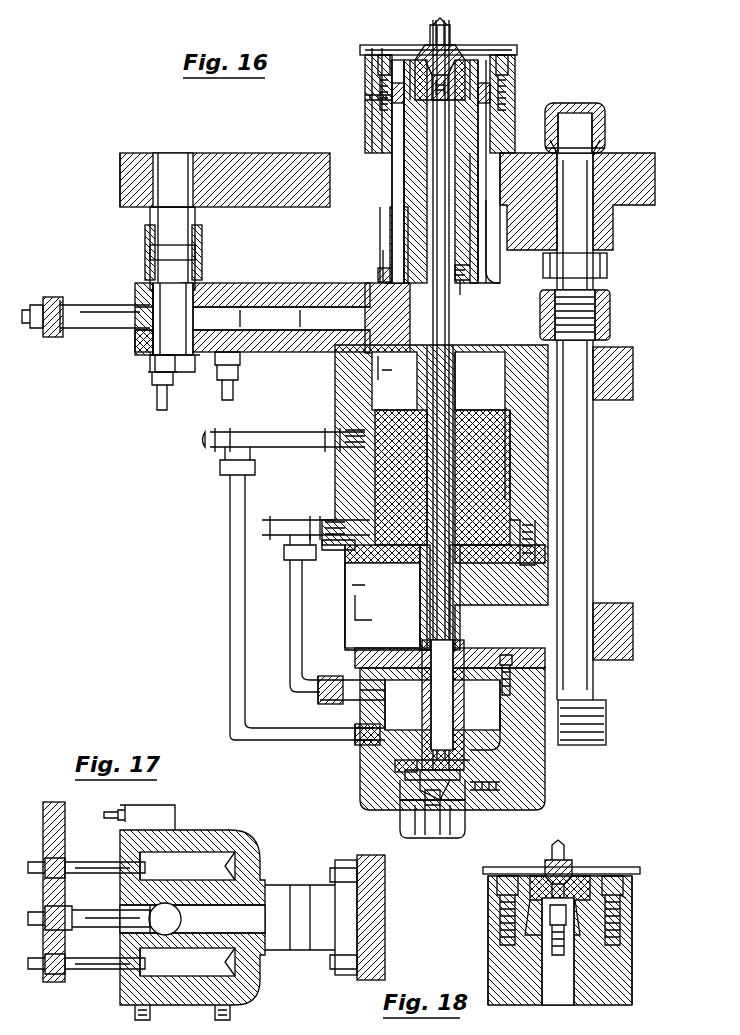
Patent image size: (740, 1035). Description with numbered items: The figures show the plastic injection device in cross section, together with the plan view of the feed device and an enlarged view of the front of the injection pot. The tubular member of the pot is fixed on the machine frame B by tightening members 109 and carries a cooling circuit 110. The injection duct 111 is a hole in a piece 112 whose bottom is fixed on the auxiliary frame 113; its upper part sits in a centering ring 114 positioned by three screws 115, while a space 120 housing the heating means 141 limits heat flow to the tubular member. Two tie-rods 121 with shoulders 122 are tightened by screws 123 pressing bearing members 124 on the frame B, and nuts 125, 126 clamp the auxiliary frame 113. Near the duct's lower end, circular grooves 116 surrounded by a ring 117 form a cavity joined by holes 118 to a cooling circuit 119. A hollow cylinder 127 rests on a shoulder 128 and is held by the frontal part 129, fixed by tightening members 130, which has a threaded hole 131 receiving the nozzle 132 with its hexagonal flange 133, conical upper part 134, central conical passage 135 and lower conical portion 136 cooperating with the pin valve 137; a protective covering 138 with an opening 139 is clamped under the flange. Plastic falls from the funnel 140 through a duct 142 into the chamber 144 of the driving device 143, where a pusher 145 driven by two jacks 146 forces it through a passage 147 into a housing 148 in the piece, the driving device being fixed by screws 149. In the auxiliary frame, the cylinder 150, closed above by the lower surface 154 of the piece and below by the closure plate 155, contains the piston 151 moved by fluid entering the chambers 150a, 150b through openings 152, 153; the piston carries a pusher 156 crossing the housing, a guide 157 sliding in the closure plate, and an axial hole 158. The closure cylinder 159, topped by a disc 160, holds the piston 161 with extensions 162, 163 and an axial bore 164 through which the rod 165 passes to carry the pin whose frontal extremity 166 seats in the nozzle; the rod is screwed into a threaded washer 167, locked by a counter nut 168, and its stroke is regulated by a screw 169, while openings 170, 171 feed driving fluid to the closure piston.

In FIG. 16, the frame of the machine B is at (282, 160).
In FIG. 16, the tightening members 109 is at (392, 90).
In FIG. 16, the cooling circuit 110 is at (505, 85).
In FIG. 16, the injection duct 111 is at (390, 222).
In FIG. 16, the piece 112 is at (380, 212).
In FIG. 18, the piece 112 is at (622, 960).
In FIG. 16, the auxiliary frame 113 is at (335, 372).
In FIG. 16, the centering ring 114 is at (492, 95).
In FIG. 16, the screws 115 is at (365, 98).
In FIG. 16, the circular grooves 116 is at (478, 270).
In FIG. 16, the ring 117 is at (384, 250).
In FIG. 16, the holes 118 is at (378, 274).
In FIG. 16, the cooling circuit 119 is at (505, 235).
In FIG. 16, the space 120 is at (370, 150).
In FIG. 16, the tie-rods 121 is at (594, 424).
In FIG. 16, the shoulders 122 is at (607, 266).
In FIG. 16, the screws 123 is at (600, 104).
In FIG. 16, the bearing members 124 is at (606, 146).
In FIG. 16, the nut 125 is at (606, 305).
In FIG. 16, the nut 126 is at (594, 740).
In FIG. 16, the hollow cylinder 127 is at (478, 118).
In FIG. 18, the hollow cylinder 127 is at (610, 990).
In FIG. 16, the shoulder 128 is at (495, 142).
In FIG. 16, the frontal part 129 is at (465, 48).
In FIG. 18, the frontal part 129 is at (520, 920).
In FIG. 16, the tightening members 130 is at (430, 40).
In FIG. 18, the tightening members 130 is at (625, 895).
In FIG. 16, the threaded hole 131 is at (372, 105).
In FIG. 16, the nozzle 132 is at (450, 38).
In FIG. 18, the nozzle 132 is at (568, 875).
In FIG. 16, the flange 133 is at (428, 42).
In FIG. 18, the flange 133 is at (590, 868).
In FIG. 16, the upper part 134 is at (432, 28).
In FIG. 18, the upper part 134 is at (554, 858).
In FIG. 16, the central conical passage 135 is at (446, 24).
In FIG. 18, the central conical passage 135 is at (568, 846).
In FIG. 16, the conical portion 136 is at (455, 42).
In FIG. 18, the conical portion 136 is at (520, 925).
In FIG. 18, the pin valve 137 is at (545, 930).
In FIG. 16, the protective covering 138 is at (455, 35).
In FIG. 18, the protective covering 138 is at (626, 872).
In FIG. 16, the opening 139 is at (460, 48).
In FIG. 16, the funnel 140 is at (173, 180).
In FIG. 16, the heating means 141 is at (392, 122).
In FIG. 16, the duct 142 is at (160, 222).
In FIG. 16, the driving device 143 is at (294, 283).
In FIG. 16, the chamber 144 is at (180, 322).
In FIG. 16, the pusher 145 is at (118, 300).
In FIG. 17, the pusher 145 is at (100, 902).
In FIG. 17, the jacks 146 is at (92, 860).
In FIG. 16, the passage 147 is at (252, 318).
In FIG. 16, the housing 148 is at (387, 318).
In FIG. 17, the screws 149 is at (330, 880).
In FIG. 16, the cylinder 150 is at (482, 448).
In FIG. 16, the chamber 150a is at (505, 478).
In FIG. 16, the chamber 150b is at (510, 525).
In FIG. 16, the piston 151 is at (414, 410).
In FIG. 16, the opening 152 is at (338, 424).
In FIG. 16, the opening 153 is at (325, 508).
In FIG. 16, the lower surface 154 is at (382, 362).
In FIG. 16, the closure plate 155 is at (478, 565).
In FIG. 16, the pusher 156 is at (455, 395).
In FIG. 16, the guide 157 is at (452, 600).
In FIG. 16, the hole 158 is at (420, 576).
In FIG. 16, the cylinder 159 is at (470, 762).
In FIG. 16, the disc 160 is at (402, 648).
In FIG. 16, the piston 161 is at (500, 735).
In FIG. 16, the extension 162 is at (450, 645).
In FIG. 16, the extension 163 is at (500, 785).
In FIG. 16, the bore 164 is at (365, 758).
In FIG. 16, the rod 165 is at (506, 655).
In FIG. 16, the frontal extremity 166 is at (420, 40).
In FIG. 18, the frontal extremity 166 is at (535, 878).
In FIG. 16, the threaded washer 167 is at (362, 790).
In FIG. 16, the counter nut 168 is at (425, 800).
In FIG. 16, the screw 169 is at (468, 825).
In FIG. 16, the opening 170 is at (360, 745).
In FIG. 16, the opening 171 is at (355, 700).